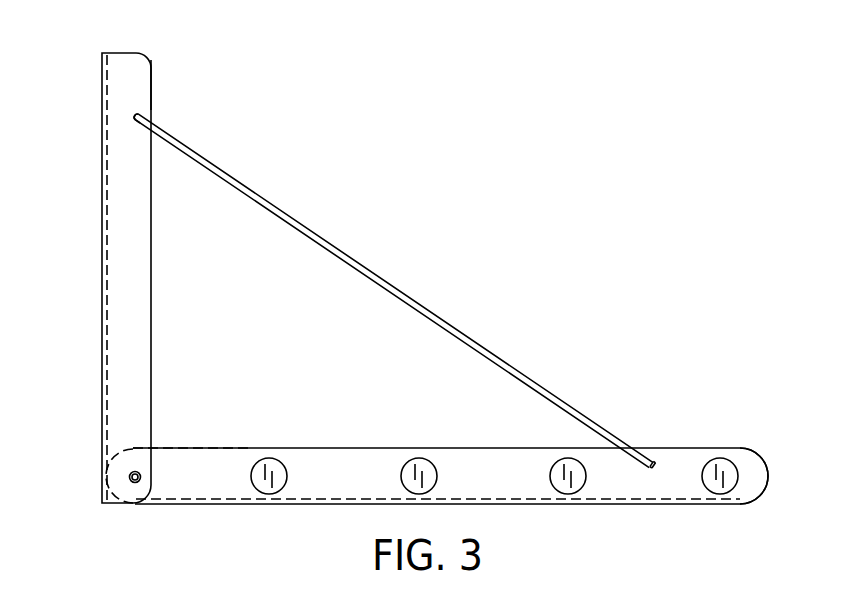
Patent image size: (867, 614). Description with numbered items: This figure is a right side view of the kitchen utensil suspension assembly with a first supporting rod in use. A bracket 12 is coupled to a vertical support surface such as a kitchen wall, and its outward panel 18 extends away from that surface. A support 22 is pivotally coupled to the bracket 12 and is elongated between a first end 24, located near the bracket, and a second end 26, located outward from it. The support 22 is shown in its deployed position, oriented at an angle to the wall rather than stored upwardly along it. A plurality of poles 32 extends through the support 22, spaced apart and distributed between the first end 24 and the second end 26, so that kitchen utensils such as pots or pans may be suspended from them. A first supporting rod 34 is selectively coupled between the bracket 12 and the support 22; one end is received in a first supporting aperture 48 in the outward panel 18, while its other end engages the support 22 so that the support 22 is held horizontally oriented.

The bracket 12 is at (103, 53).
The outward panel 18 is at (151, 85).
The support 22 is at (663, 447).
The first end 24 is at (125, 449).
The second end 26 is at (770, 465).
The pole 32 is at (418, 468).
The first supporting rod 34 is at (396, 292).
The first supporting aperture 48 is at (143, 113).